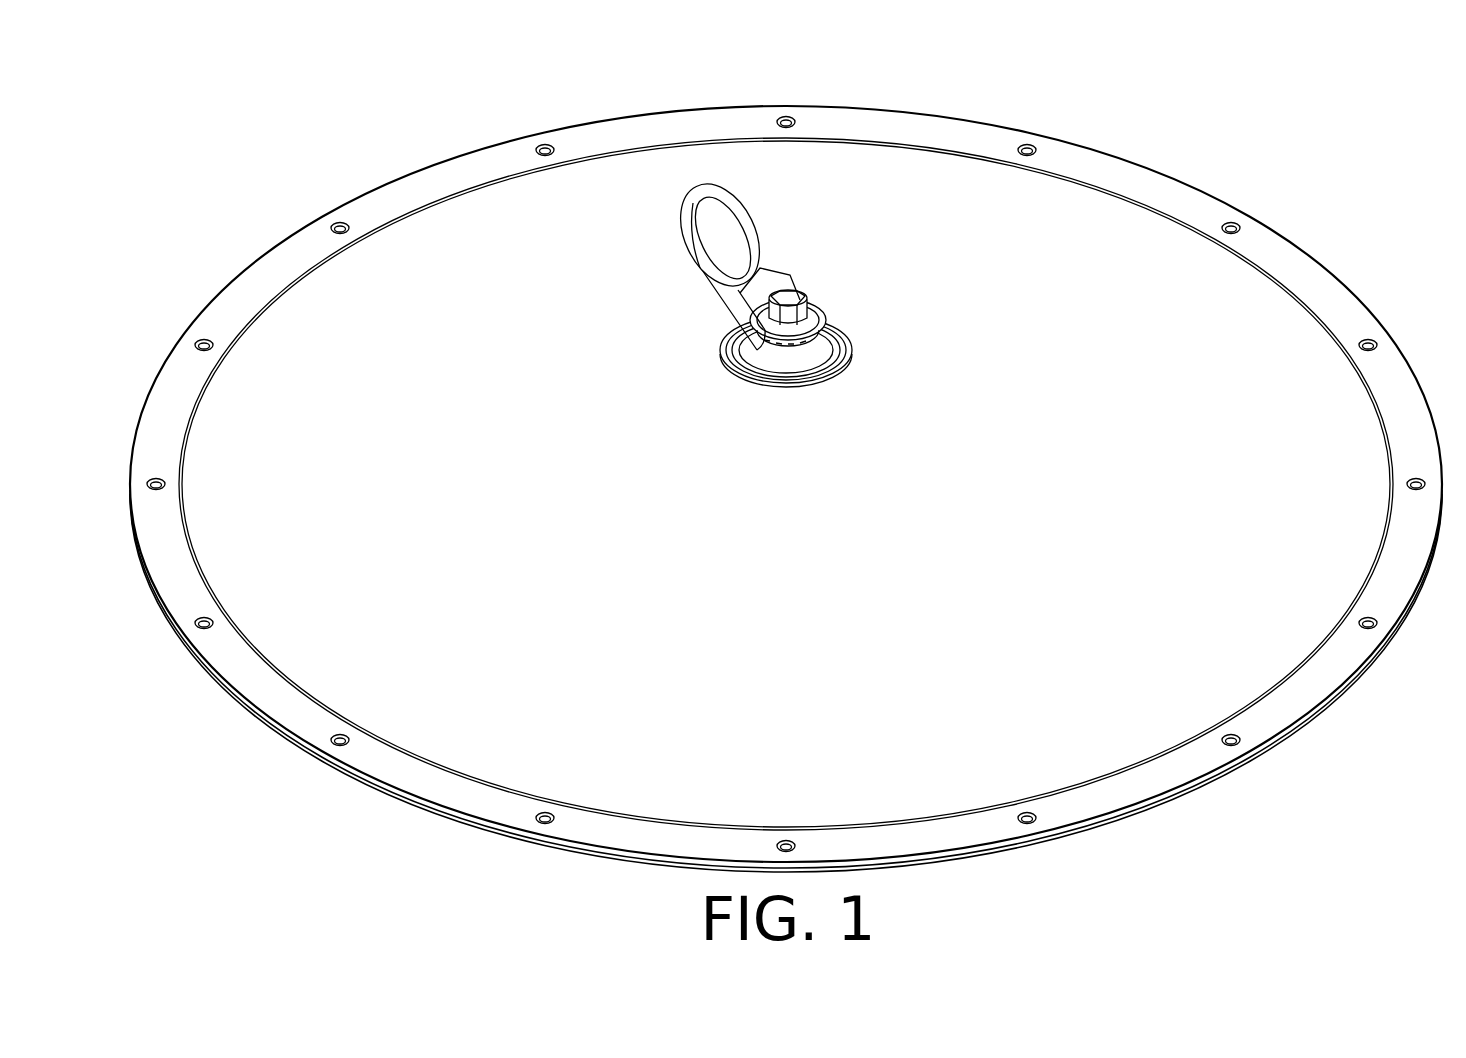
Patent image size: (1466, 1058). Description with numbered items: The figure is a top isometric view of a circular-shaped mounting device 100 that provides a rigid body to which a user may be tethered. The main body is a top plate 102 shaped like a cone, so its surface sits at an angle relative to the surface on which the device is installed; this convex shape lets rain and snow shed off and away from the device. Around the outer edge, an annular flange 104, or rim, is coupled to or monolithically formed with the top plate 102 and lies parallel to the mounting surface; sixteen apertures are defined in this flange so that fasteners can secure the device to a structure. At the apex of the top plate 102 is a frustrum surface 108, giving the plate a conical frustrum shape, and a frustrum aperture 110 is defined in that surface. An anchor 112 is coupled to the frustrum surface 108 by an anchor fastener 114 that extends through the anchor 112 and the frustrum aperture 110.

The mounting device 100 is at (175, 89).
The top plate 102 is at (1200, 313).
The annular flange 104 is at (1160, 193).
The frustrum surface 108 is at (851, 343).
The frustrum aperture 110 is at (809, 349).
The anchor 112 is at (690, 207).
The anchor fastener 114 is at (790, 297).